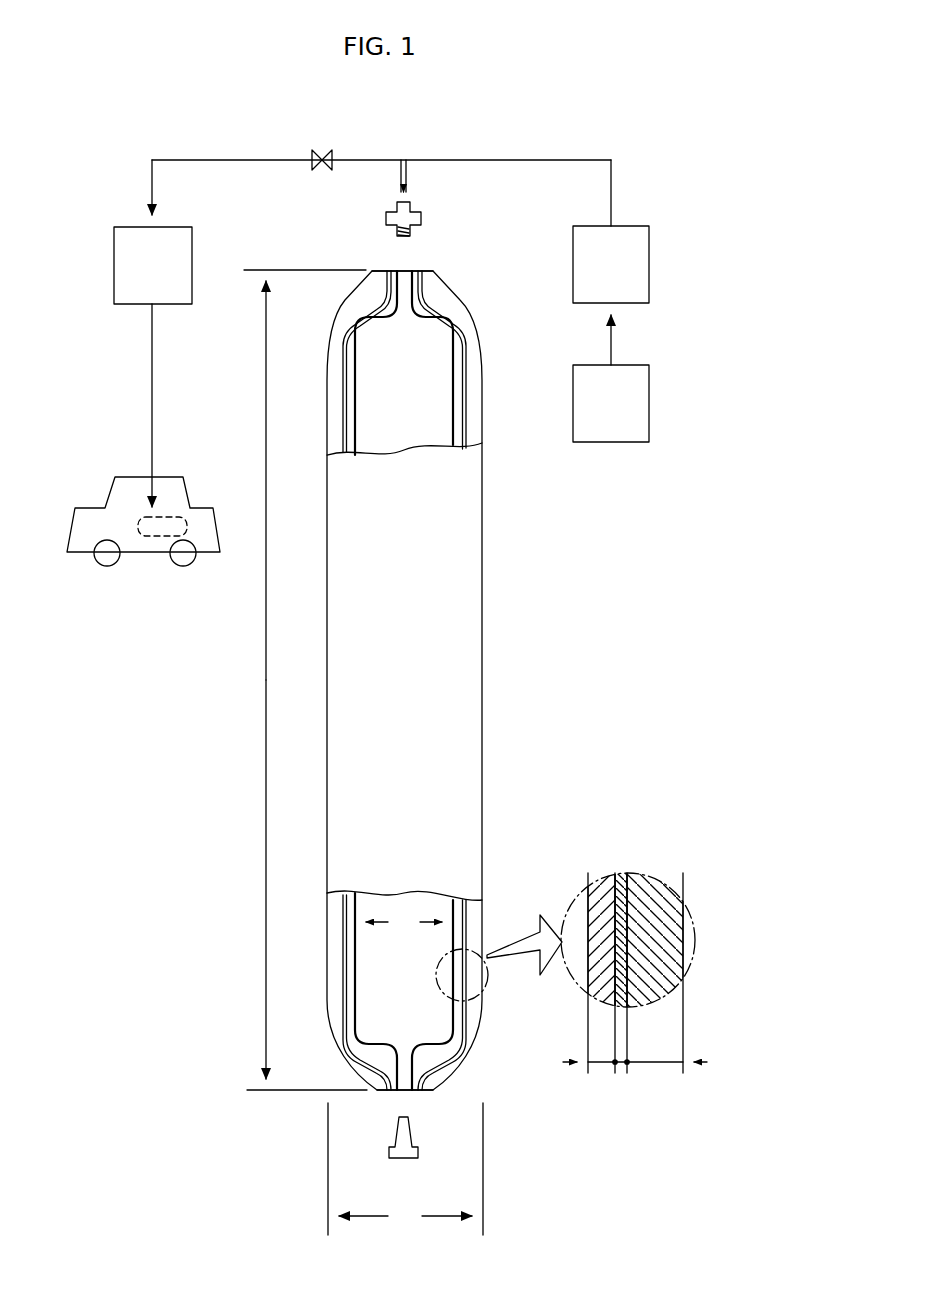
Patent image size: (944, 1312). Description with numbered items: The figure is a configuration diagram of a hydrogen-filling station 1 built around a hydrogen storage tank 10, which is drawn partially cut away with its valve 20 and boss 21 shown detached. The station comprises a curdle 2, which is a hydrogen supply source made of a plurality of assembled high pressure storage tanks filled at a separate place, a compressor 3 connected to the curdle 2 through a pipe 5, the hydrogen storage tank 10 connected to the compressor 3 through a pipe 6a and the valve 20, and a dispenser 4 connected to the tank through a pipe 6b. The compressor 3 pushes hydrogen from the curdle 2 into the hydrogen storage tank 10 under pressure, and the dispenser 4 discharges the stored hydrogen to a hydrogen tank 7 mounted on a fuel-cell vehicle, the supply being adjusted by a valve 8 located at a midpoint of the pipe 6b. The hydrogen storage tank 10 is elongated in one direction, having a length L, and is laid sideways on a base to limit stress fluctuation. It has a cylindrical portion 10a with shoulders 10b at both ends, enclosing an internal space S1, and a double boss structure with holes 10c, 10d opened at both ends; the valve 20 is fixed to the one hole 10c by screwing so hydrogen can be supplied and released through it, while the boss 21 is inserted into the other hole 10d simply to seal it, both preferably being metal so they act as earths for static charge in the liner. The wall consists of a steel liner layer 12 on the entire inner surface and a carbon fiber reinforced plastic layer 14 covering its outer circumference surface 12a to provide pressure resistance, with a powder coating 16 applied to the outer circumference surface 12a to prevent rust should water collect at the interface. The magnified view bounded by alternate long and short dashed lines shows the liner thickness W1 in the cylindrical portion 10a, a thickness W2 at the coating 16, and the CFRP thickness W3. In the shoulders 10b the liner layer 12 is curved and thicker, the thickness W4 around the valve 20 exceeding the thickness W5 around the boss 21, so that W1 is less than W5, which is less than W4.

The hydrogen-filling station 1 is at (680, 170).
The curdle 2 is at (649, 412).
The compressor 3 is at (649, 263).
The dispenser 4 is at (114, 273).
The pipe 5 is at (611, 338).
The pipe 6a is at (410, 182).
The pipe 6b is at (398, 182).
The hydrogen tank 7 is at (162, 537).
The valve 8 is at (325, 150).
The hydrogen storage tank 10 is at (481, 683).
The cylindrical portion 10a is at (484, 657).
The shoulder 10b is at (452, 283).
The hole 10c is at (405, 271).
The hole 10d is at (400, 1092).
The liner layer 12 is at (450, 415).
The outer circumference surface 12a is at (615, 875).
The carbon fiber reinforced plastic layer 14 is at (482, 378).
The coating 16 is at (455, 345).
The valve 20 is at (386, 233).
The boss 21 is at (389, 1150).
The internal space S1 is at (412, 404).
The length L is at (305, 680).
The thickness W1 is at (605, 1067).
The intermediate layer thickness W2 is at (621, 1067).
The thickness W3 is at (656, 1067).
The thickness W4 is at (388, 318).
The thickness W5 is at (388, 1052).